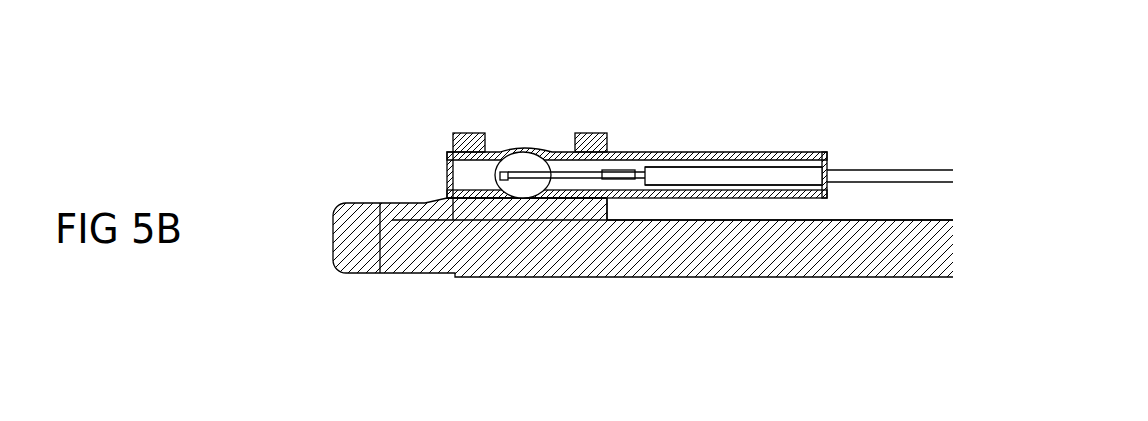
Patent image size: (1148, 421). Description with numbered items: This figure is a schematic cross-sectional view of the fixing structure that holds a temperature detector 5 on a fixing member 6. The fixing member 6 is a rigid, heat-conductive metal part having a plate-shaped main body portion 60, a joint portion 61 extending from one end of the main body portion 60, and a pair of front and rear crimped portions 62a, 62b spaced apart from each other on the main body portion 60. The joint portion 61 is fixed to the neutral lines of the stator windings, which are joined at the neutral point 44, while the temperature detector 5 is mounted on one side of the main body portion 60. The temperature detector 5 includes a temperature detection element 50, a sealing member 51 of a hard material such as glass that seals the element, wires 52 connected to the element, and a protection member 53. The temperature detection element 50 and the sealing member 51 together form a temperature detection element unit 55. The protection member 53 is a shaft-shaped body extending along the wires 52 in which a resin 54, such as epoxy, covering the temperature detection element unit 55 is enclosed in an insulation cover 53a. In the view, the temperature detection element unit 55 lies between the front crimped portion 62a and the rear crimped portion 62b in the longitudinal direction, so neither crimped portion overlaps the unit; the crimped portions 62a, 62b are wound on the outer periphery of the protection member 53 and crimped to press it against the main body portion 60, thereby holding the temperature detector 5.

The temperature detector 5 is at (765, 148).
The fixing member 6 is at (591, 207).
The neutral point 44 is at (357, 230).
The temperature detection element 50 is at (500, 180).
The sealing member 51 is at (522, 187).
The wire 52 is at (572, 168).
The protection member 53 is at (767, 75).
The insulation cover 53a is at (708, 155).
The resin 54 is at (653, 162).
The temperature detection element unit 55 is at (510, 340).
The main body portion 60 is at (562, 208).
The joint portion 61 is at (393, 217).
The front crimped portion 62a is at (465, 133).
The rear crimped portion 62b is at (592, 133).